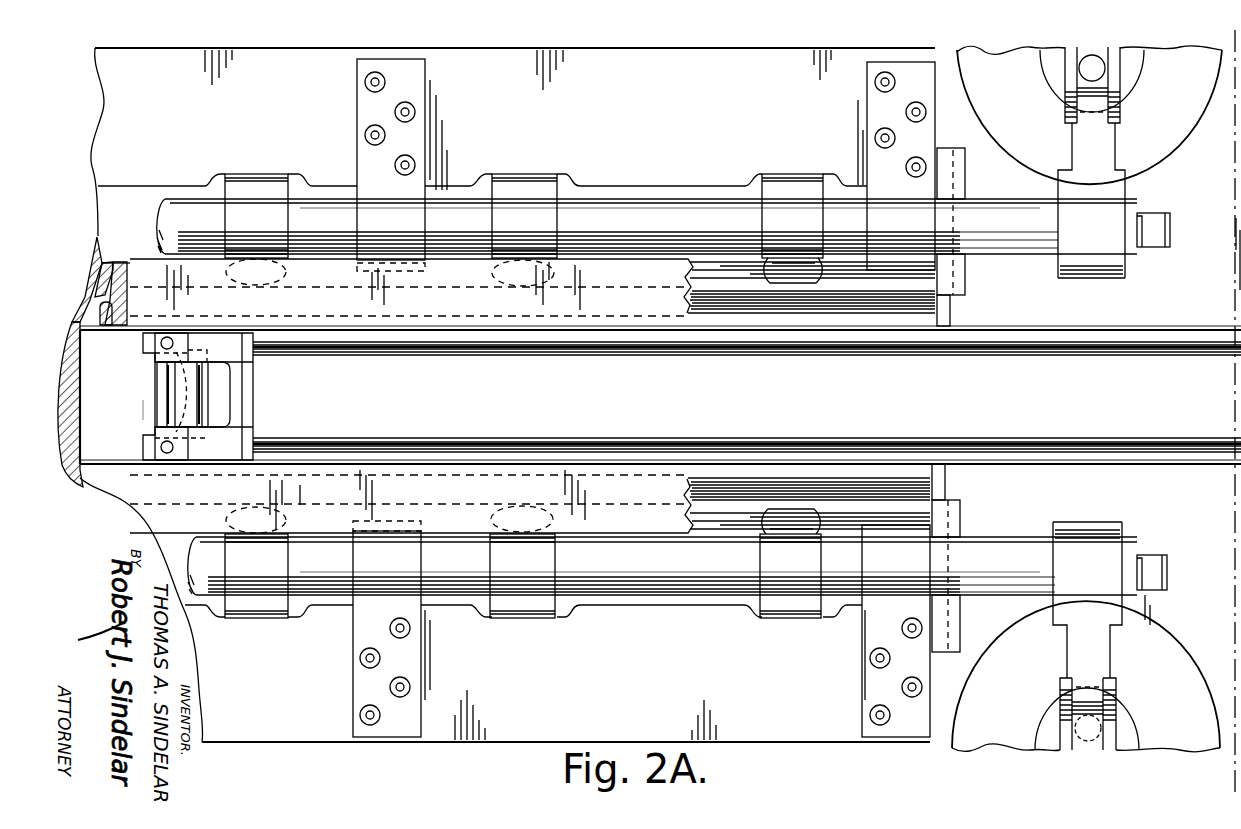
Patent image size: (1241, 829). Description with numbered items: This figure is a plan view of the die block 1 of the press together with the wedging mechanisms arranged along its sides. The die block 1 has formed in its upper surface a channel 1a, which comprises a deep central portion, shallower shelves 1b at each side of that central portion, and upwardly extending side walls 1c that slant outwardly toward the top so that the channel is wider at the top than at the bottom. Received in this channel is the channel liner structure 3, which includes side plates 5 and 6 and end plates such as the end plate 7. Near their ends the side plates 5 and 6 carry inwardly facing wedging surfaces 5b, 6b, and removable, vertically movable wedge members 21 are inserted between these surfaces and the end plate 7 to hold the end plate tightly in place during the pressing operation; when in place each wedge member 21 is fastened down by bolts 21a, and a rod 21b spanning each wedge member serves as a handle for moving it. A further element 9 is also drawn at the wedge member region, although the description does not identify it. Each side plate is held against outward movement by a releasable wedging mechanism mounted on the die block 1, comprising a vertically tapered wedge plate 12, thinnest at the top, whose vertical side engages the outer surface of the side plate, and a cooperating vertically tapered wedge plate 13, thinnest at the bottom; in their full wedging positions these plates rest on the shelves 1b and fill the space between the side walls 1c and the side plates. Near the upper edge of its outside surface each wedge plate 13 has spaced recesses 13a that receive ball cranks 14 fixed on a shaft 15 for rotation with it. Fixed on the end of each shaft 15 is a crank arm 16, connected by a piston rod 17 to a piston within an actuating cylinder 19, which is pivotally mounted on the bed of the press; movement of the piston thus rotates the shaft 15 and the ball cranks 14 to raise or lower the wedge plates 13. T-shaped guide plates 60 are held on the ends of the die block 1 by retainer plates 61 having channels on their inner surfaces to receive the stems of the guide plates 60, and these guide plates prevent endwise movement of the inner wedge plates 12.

The die block 1 is at (652, 104).
The channel 1a is at (73, 482).
The shelves 1b is at (92, 292).
The side walls 1c is at (97, 270).
The channel liner structure 3 is at (126, 412).
The side plate 5 is at (445, 452).
The wedging surface 5b is at (165, 386).
The side plate 6 is at (502, 337).
The wedging surface 6b is at (165, 377).
The end plate 7 is at (253, 404).
The bearing roller 9 is at (165, 368).
The wedge plate 12 is at (875, 313).
The wedge plate 13 is at (663, 275).
The recesses 13a is at (576, 283).
The ball cranks 14 is at (275, 258).
The shaft 15 is at (628, 208).
The crank arm 16 is at (1115, 185).
The piston rod 17 is at (1115, 88).
The actuating cylinder 19 is at (994, 116).
The wedge members 21 is at (243, 378).
The bolts 21a is at (155, 343).
The rod 21b is at (194, 394).
The T-shaped guide plates 60 is at (950, 304).
The retainer plates 61 is at (965, 270).